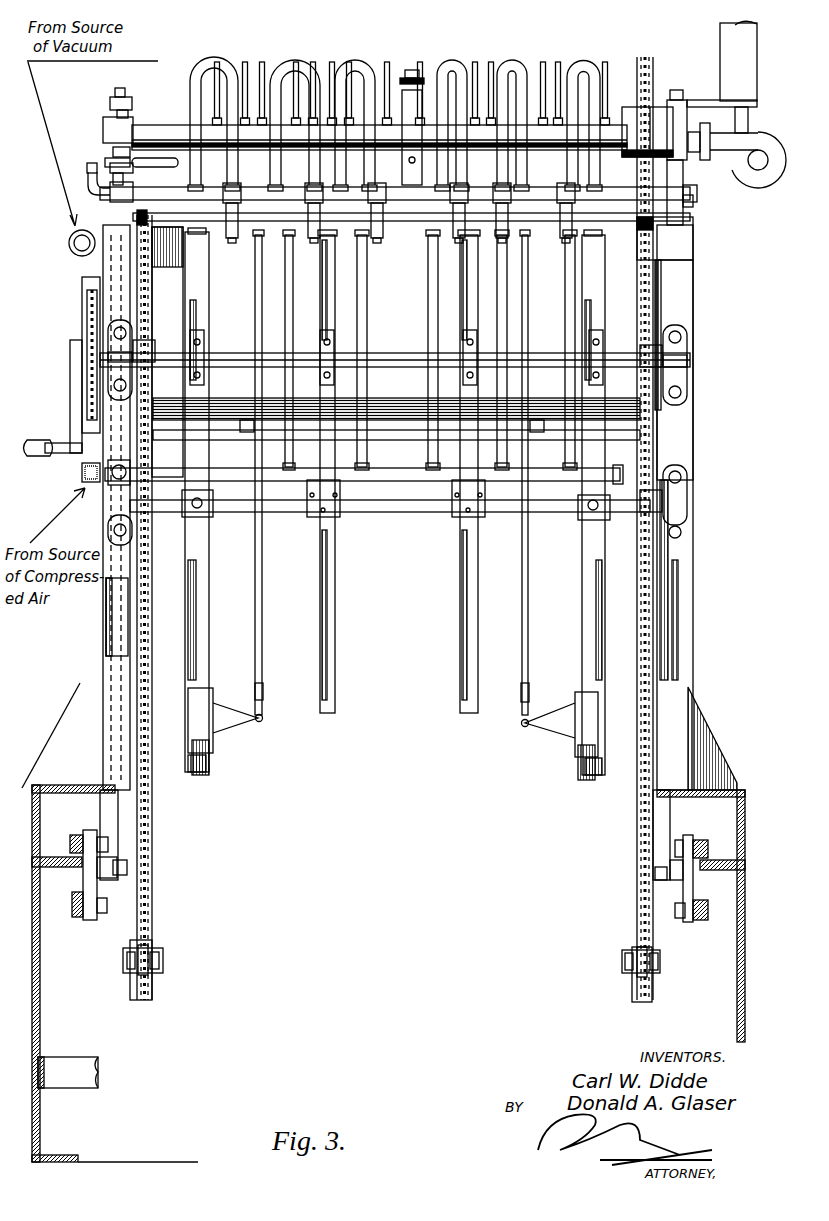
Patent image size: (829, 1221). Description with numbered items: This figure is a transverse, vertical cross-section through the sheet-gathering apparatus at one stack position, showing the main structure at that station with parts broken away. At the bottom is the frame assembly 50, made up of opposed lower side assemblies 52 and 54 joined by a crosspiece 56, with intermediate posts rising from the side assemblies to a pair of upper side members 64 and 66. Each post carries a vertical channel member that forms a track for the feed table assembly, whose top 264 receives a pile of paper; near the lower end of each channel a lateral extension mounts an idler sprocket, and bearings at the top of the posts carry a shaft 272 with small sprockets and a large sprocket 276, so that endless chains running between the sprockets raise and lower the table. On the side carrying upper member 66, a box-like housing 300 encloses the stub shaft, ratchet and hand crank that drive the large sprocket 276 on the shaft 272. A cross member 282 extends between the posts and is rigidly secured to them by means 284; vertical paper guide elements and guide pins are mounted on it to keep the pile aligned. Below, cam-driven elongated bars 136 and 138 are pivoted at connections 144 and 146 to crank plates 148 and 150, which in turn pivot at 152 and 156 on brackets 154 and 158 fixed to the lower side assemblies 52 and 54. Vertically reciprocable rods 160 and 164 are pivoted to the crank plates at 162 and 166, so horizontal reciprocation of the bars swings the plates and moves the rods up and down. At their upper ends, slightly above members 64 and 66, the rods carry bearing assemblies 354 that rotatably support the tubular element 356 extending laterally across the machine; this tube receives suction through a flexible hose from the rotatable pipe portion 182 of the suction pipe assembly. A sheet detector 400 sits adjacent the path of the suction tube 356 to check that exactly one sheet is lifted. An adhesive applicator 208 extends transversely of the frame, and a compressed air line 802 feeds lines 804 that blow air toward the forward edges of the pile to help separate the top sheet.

The frame assembly 50 is at (697, 621).
The lower side assembly 52 is at (33, 955).
The lower side assembly 54 is at (745, 948).
The crosspiece 56 is at (85, 1060).
The upper side member 64 is at (695, 243).
The upper side member 66 is at (105, 228).
The elongated bar 136 is at (78, 918).
The elongated bar 138 is at (702, 920).
The pivotal connection 144 is at (103, 915).
The pivotal connection 146 is at (678, 918).
The crank plate 148 is at (88, 885).
The crank plate 150 is at (693, 885).
The pivot 152 is at (100, 835).
The bracket 154 is at (62, 848).
The pivot 156 is at (680, 838).
The bracket 158 is at (720, 858).
The vertically reciprocable rod 160 is at (110, 620).
The pivot 162 is at (127, 868).
The vertically reciprocable rod 164 is at (665, 818).
The pivot 166 is at (655, 873).
The rotatable pipe portion 182 is at (68, 243).
The adhesive applicator 208 is at (163, 123).
The top 264 is at (383, 428).
The shaft 272 is at (395, 355).
The large sprocket 276 is at (85, 345).
The cross member 282 is at (398, 512).
The securing means 284 is at (680, 490).
The box-like housing 300 is at (82, 283).
The bearing assembly 354 is at (690, 203).
The tubular element 356 is at (585, 195).
The sheet detector 400 is at (414, 62).
The compressed air line 802 is at (82, 470).
The feed line 804 is at (367, 292).